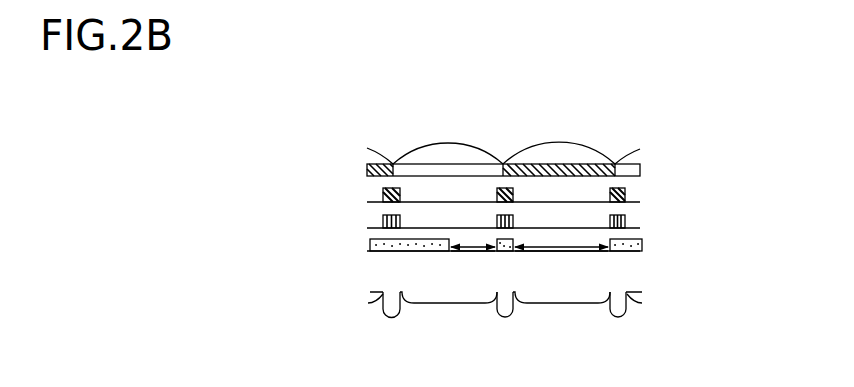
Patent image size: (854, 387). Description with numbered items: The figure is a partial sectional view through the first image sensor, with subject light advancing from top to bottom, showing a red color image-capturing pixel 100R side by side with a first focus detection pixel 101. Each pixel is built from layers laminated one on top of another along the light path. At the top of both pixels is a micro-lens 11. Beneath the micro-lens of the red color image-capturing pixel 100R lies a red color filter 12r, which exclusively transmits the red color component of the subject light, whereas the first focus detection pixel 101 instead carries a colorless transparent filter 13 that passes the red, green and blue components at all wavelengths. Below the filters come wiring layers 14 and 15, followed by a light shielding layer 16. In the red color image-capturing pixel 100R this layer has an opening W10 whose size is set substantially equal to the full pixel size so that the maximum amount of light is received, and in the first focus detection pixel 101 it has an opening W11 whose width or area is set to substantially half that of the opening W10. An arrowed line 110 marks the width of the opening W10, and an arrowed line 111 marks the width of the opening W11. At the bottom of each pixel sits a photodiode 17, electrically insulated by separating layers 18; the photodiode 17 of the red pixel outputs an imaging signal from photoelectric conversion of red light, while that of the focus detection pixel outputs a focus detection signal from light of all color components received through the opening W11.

The first focus detection pixel 101 is at (323, 120).
The red color image-capturing pixel 100R is at (710, 122).
The micro-lens 11 is at (440, 147).
The red color filter 12r is at (613, 164).
The colorless transparent filter 13 is at (467, 168).
The wiring layer 14 is at (383, 190).
The wiring layer 15 is at (383, 220).
The light shielding layer 16 is at (370, 245).
The photodiode 17 is at (427, 297).
The separating layer 18 is at (392, 312).
The arrowed line 110 is at (543, 247).
The arrowed line 111 is at (482, 247).
The opening W10 is at (582, 246).
The opening W11 is at (465, 245).